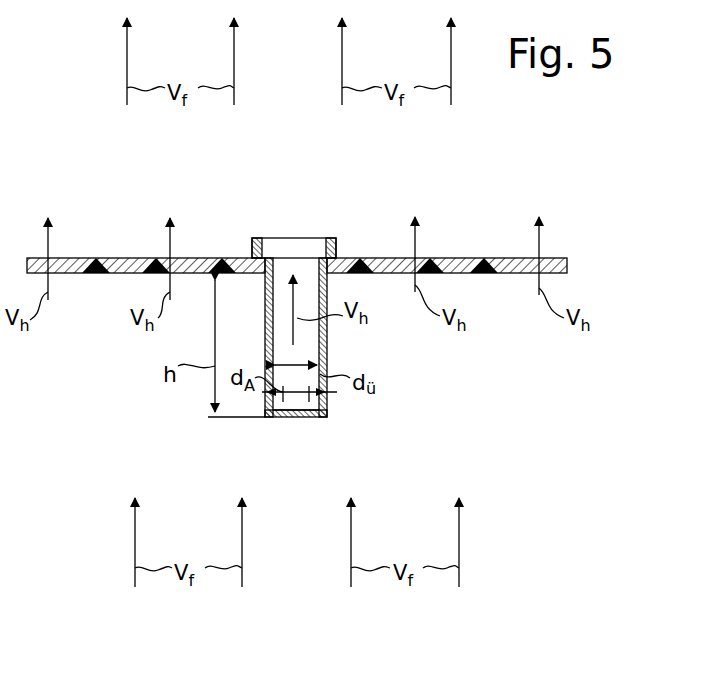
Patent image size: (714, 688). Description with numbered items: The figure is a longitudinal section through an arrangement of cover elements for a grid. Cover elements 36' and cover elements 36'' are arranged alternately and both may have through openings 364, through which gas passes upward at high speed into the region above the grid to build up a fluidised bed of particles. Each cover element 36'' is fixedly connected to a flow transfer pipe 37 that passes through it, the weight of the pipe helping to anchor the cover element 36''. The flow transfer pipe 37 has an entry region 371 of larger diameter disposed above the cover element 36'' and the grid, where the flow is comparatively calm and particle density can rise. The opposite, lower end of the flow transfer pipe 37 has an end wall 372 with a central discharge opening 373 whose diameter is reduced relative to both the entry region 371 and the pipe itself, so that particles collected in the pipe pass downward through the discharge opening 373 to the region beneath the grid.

The cover element 36' is at (146, 244).
The cover element 36'' is at (389, 239).
The through opening 364 is at (158, 258).
The flow transfer pipe 37 is at (327, 345).
The entry region 371 is at (302, 252).
The end wall 372 is at (278, 418).
The discharge opening 373 is at (300, 418).